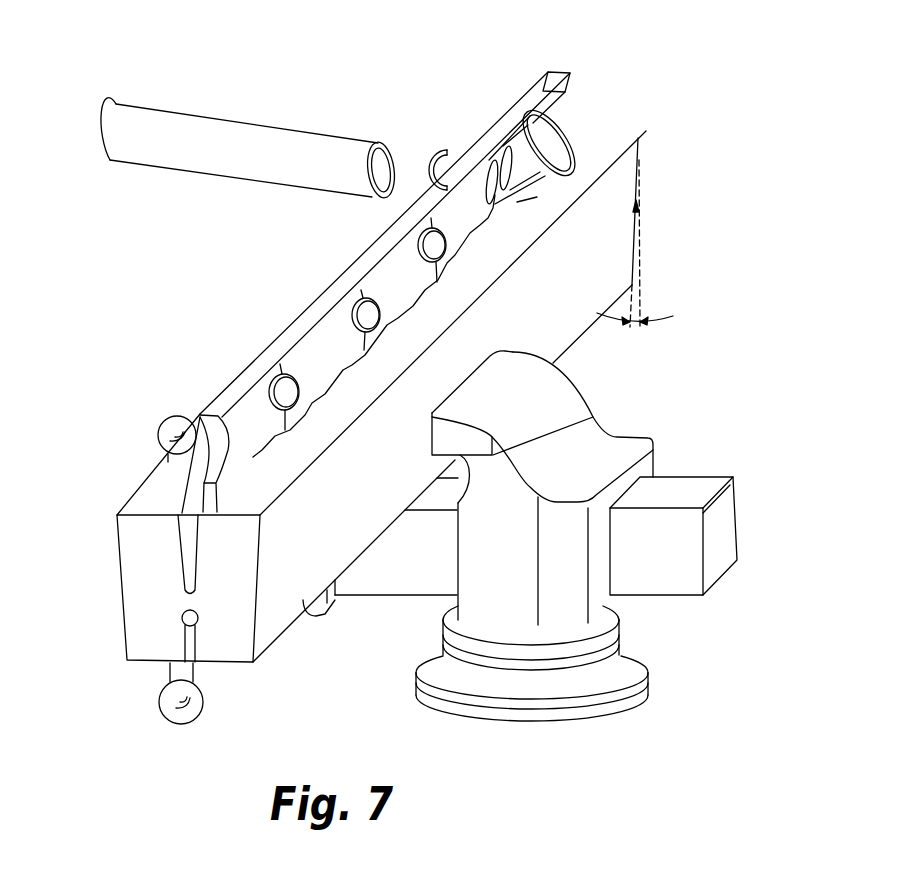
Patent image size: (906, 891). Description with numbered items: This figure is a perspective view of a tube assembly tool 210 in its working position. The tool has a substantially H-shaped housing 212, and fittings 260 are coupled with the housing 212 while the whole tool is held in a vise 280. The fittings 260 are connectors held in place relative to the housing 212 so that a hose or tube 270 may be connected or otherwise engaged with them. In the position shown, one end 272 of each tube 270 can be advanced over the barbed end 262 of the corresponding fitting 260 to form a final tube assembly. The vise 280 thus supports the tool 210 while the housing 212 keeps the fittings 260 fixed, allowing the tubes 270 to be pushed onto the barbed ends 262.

The tube assembly tool 210 is at (648, 100).
The H-shaped housing 212 is at (142, 580).
The fitting 260 is at (474, 138).
The barbed end 262 is at (452, 157).
The tube 270 is at (218, 130).
The end of tube 272 is at (395, 138).
The vise 280 is at (678, 448).